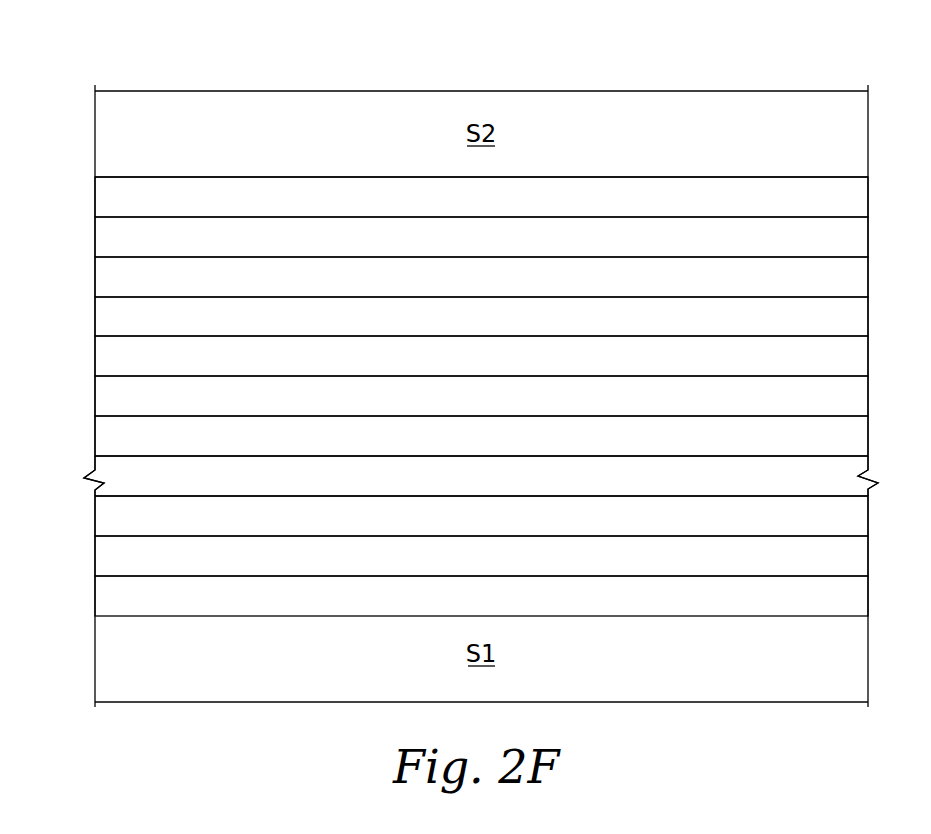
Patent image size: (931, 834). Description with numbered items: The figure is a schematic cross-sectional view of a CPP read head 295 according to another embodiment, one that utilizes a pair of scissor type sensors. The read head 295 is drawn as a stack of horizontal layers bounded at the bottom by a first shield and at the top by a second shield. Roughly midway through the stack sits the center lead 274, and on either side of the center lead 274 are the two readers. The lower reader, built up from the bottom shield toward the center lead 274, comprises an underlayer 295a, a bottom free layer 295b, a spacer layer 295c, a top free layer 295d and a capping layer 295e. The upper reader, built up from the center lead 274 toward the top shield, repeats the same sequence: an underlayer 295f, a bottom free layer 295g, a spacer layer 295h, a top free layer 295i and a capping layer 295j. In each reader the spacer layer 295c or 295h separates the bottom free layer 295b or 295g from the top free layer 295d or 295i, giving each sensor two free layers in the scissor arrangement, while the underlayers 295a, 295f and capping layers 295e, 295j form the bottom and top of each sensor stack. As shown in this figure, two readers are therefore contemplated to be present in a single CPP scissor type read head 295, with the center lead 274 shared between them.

The CPP read head 295 is at (133, 54).
The underlayer 295a is at (456, 606).
The bottom free layer 295b is at (456, 566).
The spacer layer 295c is at (456, 526).
The top free layer 295d is at (456, 486).
The capping layer 295e is at (456, 446).
The underlayer 295f is at (458, 366).
The bottom free layer 295g is at (456, 326).
The spacer layer 295h is at (456, 287).
The top free layer 295i is at (458, 247).
The capping layer 295j is at (458, 207).
The center lead 274 is at (458, 406).